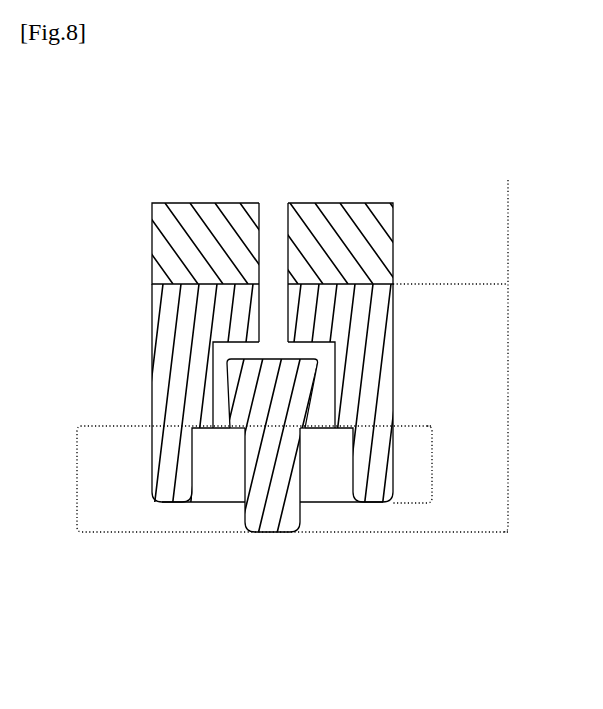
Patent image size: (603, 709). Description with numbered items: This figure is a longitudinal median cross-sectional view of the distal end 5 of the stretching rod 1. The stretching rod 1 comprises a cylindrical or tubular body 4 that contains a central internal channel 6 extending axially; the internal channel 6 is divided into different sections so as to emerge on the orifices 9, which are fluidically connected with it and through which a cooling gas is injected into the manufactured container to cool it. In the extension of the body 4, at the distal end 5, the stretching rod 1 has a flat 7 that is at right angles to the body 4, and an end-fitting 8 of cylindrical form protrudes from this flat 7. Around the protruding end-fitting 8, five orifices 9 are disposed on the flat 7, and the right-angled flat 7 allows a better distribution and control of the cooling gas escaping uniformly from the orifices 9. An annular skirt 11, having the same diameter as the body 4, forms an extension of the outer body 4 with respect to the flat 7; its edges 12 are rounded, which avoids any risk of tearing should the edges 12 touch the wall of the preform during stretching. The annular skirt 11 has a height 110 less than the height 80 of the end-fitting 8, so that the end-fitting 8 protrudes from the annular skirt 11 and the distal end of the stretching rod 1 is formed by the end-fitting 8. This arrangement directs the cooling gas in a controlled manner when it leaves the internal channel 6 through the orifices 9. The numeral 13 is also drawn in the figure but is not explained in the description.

The stretching rod 1 is at (101, 217).
The body 4 is at (508, 230).
The distal end 5 is at (508, 401).
The central internal channel 6 is at (275, 217).
The flat 7 is at (172, 514).
The end-fitting 8 is at (281, 546).
The orifices 9 is at (328, 441).
The annular skirt 11 is at (235, 441).
The edges 12 is at (157, 504).
The protrusion tip 13 is at (272, 535).
The height of the end-fitting 80 is at (77, 465).
The height of the annular skirt 110 is at (432, 458).